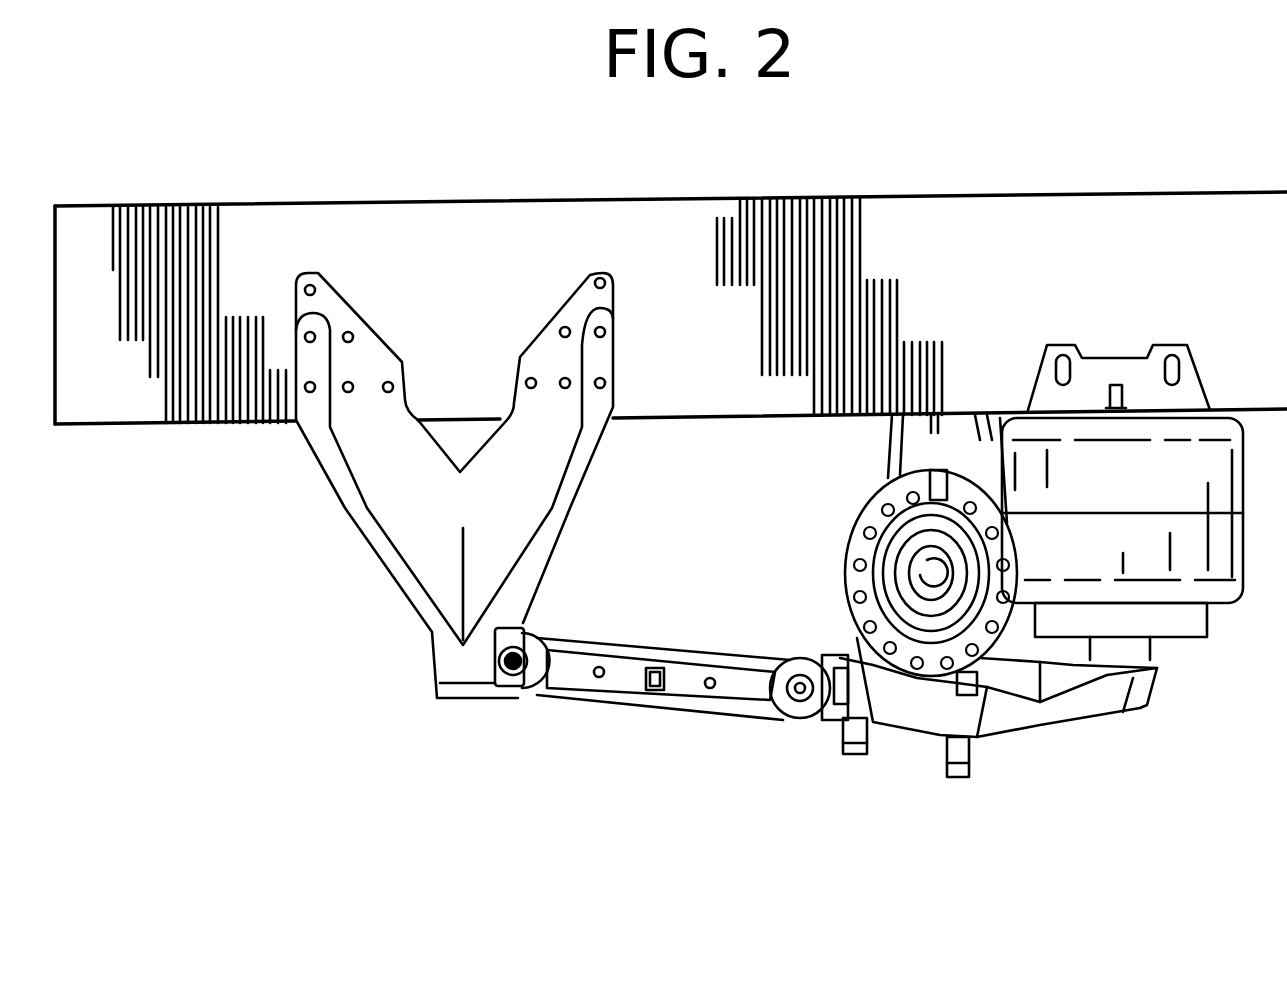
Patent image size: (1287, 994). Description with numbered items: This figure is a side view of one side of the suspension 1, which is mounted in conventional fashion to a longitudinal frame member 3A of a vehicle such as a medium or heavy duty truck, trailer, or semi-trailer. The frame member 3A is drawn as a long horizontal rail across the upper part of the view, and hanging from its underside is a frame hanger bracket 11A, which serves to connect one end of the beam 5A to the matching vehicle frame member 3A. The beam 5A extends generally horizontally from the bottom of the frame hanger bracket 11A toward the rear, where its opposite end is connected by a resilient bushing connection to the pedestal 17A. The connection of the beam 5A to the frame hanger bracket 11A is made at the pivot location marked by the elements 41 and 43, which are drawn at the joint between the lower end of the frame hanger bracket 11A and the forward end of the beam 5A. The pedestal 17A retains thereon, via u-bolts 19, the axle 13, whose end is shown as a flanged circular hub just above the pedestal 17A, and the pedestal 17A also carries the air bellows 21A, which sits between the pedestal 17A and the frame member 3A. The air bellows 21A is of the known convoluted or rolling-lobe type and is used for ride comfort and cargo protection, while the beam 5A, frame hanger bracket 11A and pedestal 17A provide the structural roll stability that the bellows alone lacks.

The suspension 1 is at (438, 752).
The longitudinal frame member 3A is at (1000, 281).
The beam 5A is at (608, 640).
The frame hanger bracket 11A is at (375, 555).
The axle 13 is at (915, 568).
The pedestal 17A is at (1000, 720).
The u-bolts 19 is at (955, 777).
The air bellows 21A is at (1147, 492).
The pivot bolt 41 is at (518, 686).
The pivot bushing 43 is at (525, 640).